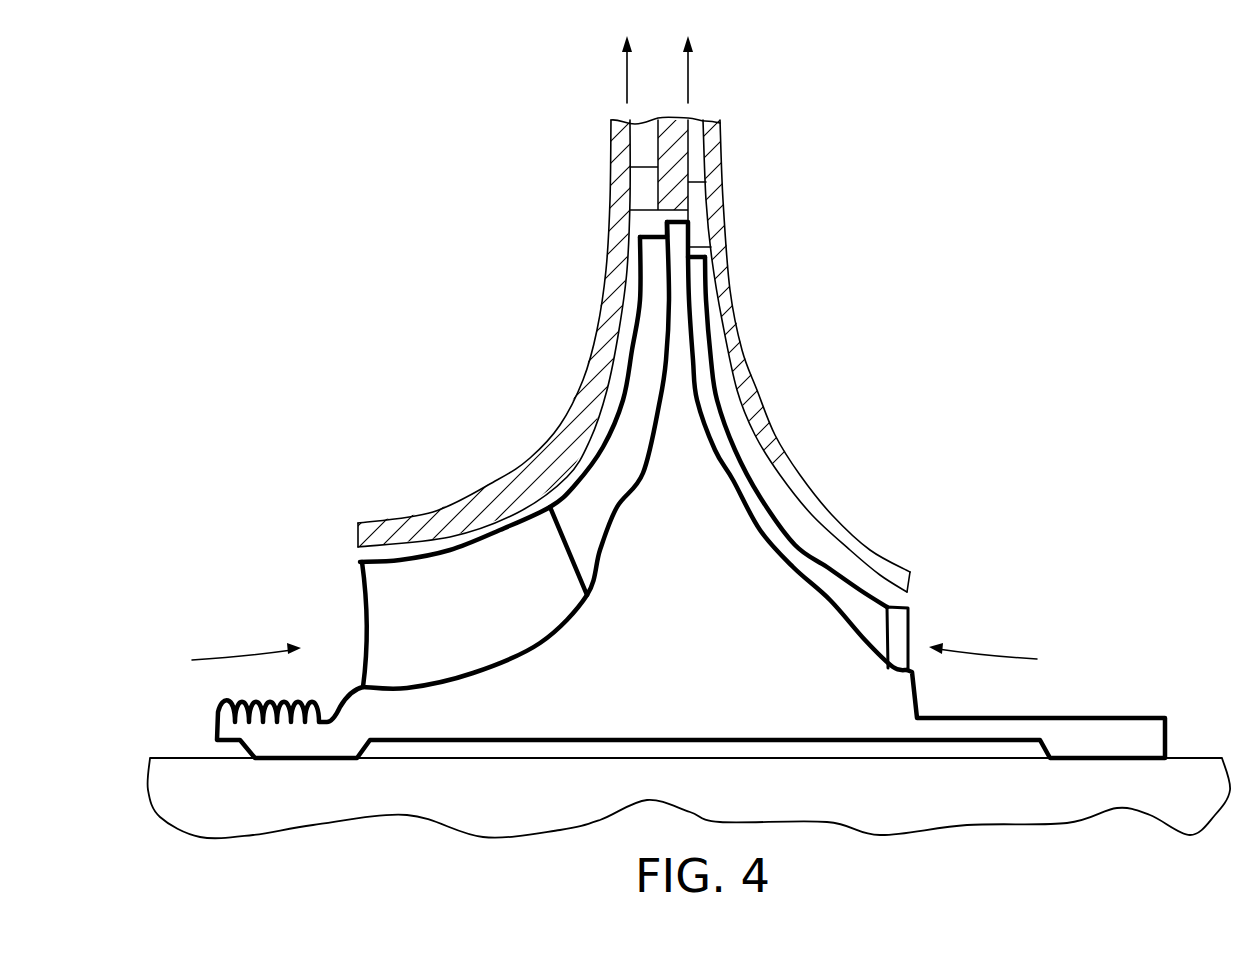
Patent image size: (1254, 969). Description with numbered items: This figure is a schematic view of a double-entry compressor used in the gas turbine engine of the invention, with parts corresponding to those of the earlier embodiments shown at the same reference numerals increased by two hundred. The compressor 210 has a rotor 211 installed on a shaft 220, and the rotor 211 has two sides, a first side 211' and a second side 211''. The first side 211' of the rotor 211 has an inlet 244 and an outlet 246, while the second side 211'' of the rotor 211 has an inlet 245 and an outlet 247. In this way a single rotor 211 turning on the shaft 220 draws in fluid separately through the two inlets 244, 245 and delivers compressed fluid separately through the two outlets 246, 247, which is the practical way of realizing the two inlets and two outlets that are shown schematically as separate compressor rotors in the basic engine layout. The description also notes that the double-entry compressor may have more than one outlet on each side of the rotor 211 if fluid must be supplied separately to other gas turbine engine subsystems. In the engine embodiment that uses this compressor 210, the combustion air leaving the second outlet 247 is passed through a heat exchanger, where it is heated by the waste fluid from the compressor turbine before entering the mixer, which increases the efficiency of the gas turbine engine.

The compressor 210 is at (600, 301).
The rotor 211 is at (691, 490).
The first side of rotor 211' is at (458, 462).
The second side of rotor 211'' is at (806, 463).
The shaft 220 is at (1065, 808).
The inlet 244 is at (246, 637).
The inlet 245 is at (992, 635).
The outlet 246 is at (598, 69).
The second outlet 247 is at (716, 69).